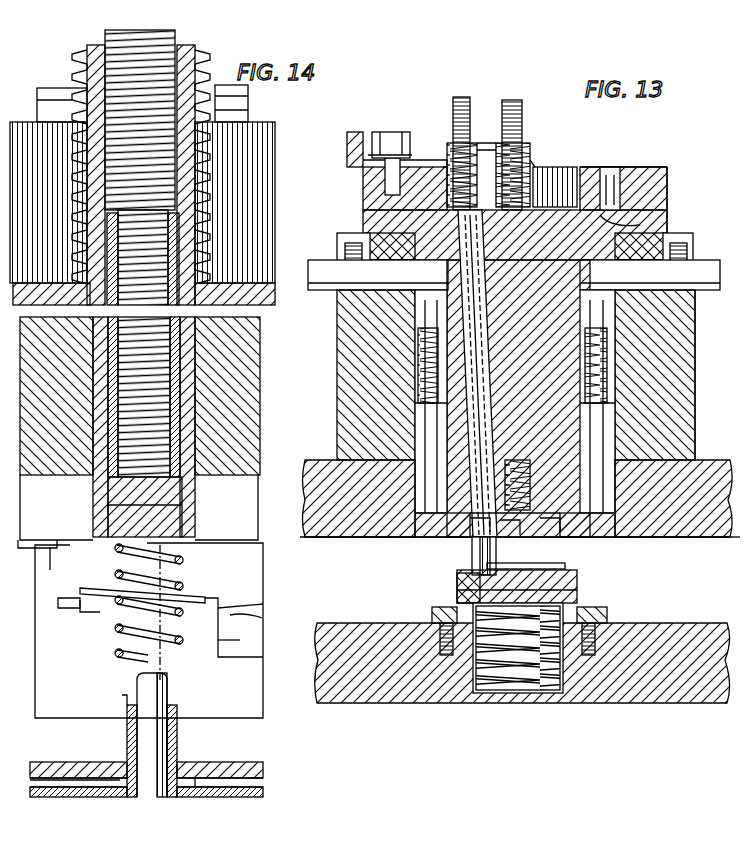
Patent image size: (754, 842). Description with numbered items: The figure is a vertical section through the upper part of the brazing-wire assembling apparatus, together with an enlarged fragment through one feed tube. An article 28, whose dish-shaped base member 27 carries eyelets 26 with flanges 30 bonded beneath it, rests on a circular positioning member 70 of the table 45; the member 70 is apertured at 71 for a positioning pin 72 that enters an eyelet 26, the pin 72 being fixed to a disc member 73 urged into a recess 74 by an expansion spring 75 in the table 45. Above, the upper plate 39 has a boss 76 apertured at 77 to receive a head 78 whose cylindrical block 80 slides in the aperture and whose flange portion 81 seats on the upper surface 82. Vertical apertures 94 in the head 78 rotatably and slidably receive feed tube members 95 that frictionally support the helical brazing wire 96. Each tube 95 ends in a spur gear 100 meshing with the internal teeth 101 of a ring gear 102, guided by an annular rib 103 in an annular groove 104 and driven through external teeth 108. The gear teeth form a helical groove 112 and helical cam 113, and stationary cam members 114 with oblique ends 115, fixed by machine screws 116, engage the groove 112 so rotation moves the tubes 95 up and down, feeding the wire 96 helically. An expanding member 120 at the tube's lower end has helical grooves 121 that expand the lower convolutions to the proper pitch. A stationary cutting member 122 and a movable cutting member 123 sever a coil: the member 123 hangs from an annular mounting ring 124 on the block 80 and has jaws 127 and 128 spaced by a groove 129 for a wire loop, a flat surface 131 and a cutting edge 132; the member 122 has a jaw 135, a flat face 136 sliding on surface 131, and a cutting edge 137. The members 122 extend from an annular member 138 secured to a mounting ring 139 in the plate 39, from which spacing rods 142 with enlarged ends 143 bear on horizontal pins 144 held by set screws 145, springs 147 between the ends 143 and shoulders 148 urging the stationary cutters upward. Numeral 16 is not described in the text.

In FIG. 14, the valve member 16 is at (72, 446).
In FIG. 14, the eyelet 26 is at (178, 733).
In FIG. 13, the eyelet 26 is at (478, 555).
In FIG. 14, the dish-shaped base member 27 is at (260, 762).
In FIG. 14, the article 28 is at (50, 762).
In FIG. 13, the article 28 is at (574, 569).
In FIG. 14, the flange 30 is at (205, 778).
In FIG. 13, the upper plate 39 is at (733, 540).
In FIG. 13, the table 45 is at (670, 700).
In FIG. 14, the positioning member 70 is at (263, 790).
In FIG. 13, the positioning member 70 is at (577, 586).
In FIG. 13, the aperture 71 is at (457, 588).
In FIG. 14, the positioning pin 72 is at (168, 693).
In FIG. 13, the positioning pin 72 is at (472, 565).
In FIG. 13, the disc member 73 is at (445, 607).
In FIG. 13, the recess 74 is at (590, 607).
In FIG. 13, the expansion spring 75 is at (512, 690).
In FIG. 13, the boss 76 is at (355, 355).
In FIG. 13, the aperture 77 is at (670, 376).
In FIG. 13, the head 78 is at (678, 172).
In FIG. 14, the cylindrical block 80 is at (235, 385).
In FIG. 13, the cylindrical block 80 is at (450, 450).
In FIG. 13, the flange portion 81 is at (370, 200).
In FIG. 13, the upper surface 82 is at (380, 232).
In FIG. 14, the aperture 94 is at (98, 383).
In FIG. 13, the aperture 94 is at (490, 272).
In FIG. 13, the feed tube member 95 is at (483, 262).
In FIG. 14, the brazing wire 96 is at (105, 42).
In FIG. 13, the brazing wire 96 is at (470, 100).
In FIG. 14, the spur gear 100 is at (212, 50).
In FIG. 13, the spur gear 100 is at (452, 143).
In FIG. 14, the internal teeth 101 is at (255, 180).
In FIG. 13, the internal teeth 101 is at (605, 167).
In FIG. 13, the ring gear 102 is at (623, 160).
In FIG. 13, the annular rib 103 is at (655, 233).
In FIG. 13, the annular groove 104 is at (645, 222).
In FIG. 13, the external teeth 108 is at (667, 190).
In FIG. 14, the helical groove 112 is at (78, 62).
In FIG. 14, the helical cam 113 is at (62, 82).
In FIG. 13, the helical cam 113 is at (486, 143).
In FIG. 14, the stationary cam member 114 is at (248, 115).
In FIG. 13, the stationary cam member 114 is at (353, 132).
In FIG. 14, the oblique and arcuate end 115 is at (248, 98).
In FIG. 13, the oblique and arcuate end 115 is at (443, 165).
In FIG. 13, the machine screw 116 is at (385, 132).
In FIG. 14, the expanding member 120 is at (175, 494).
In FIG. 14, the helical peripheral groove 121 is at (182, 510).
In FIG. 14, the stationary cutting member 122 is at (262, 615).
In FIG. 13, the stationary cutting member 122 is at (400, 552).
In FIG. 14, the movable cutting member 123 is at (38, 548).
In FIG. 13, the movable cutting member 123 is at (520, 500).
In FIG. 13, the annular mounting ring 124 is at (660, 490).
In FIG. 14, the jaw 127 is at (70, 610).
In FIG. 14, the jaw 128 is at (68, 624).
In FIG. 14, the groove 129 is at (130, 558).
In FIG. 14, the flat vertical surface 131 is at (183, 585).
In FIG. 14, the cutting edge 132 is at (115, 632).
In FIG. 14, the jaw 135 is at (250, 598).
In FIG. 14, the flat vertical face 136 is at (118, 653).
In FIG. 14, the cutting edge 137 is at (185, 598).
In FIG. 14, the annular member 138 is at (265, 712).
In FIG. 13, the annular member 138 is at (568, 542).
In FIG. 14, the mounting ring 139 is at (255, 635).
In FIG. 13, the mounting ring 139 is at (615, 540).
In FIG. 13, the spacing rod 142 is at (425, 425).
In FIG. 13, the enlarged end 143 is at (420, 310).
In FIG. 13, the horizontal pin 144 is at (365, 278).
In FIG. 13, the set screw 145 is at (345, 246).
In FIG. 13, the spring 147 is at (418, 370).
In FIG. 13, the shoulder 148 is at (418, 400).